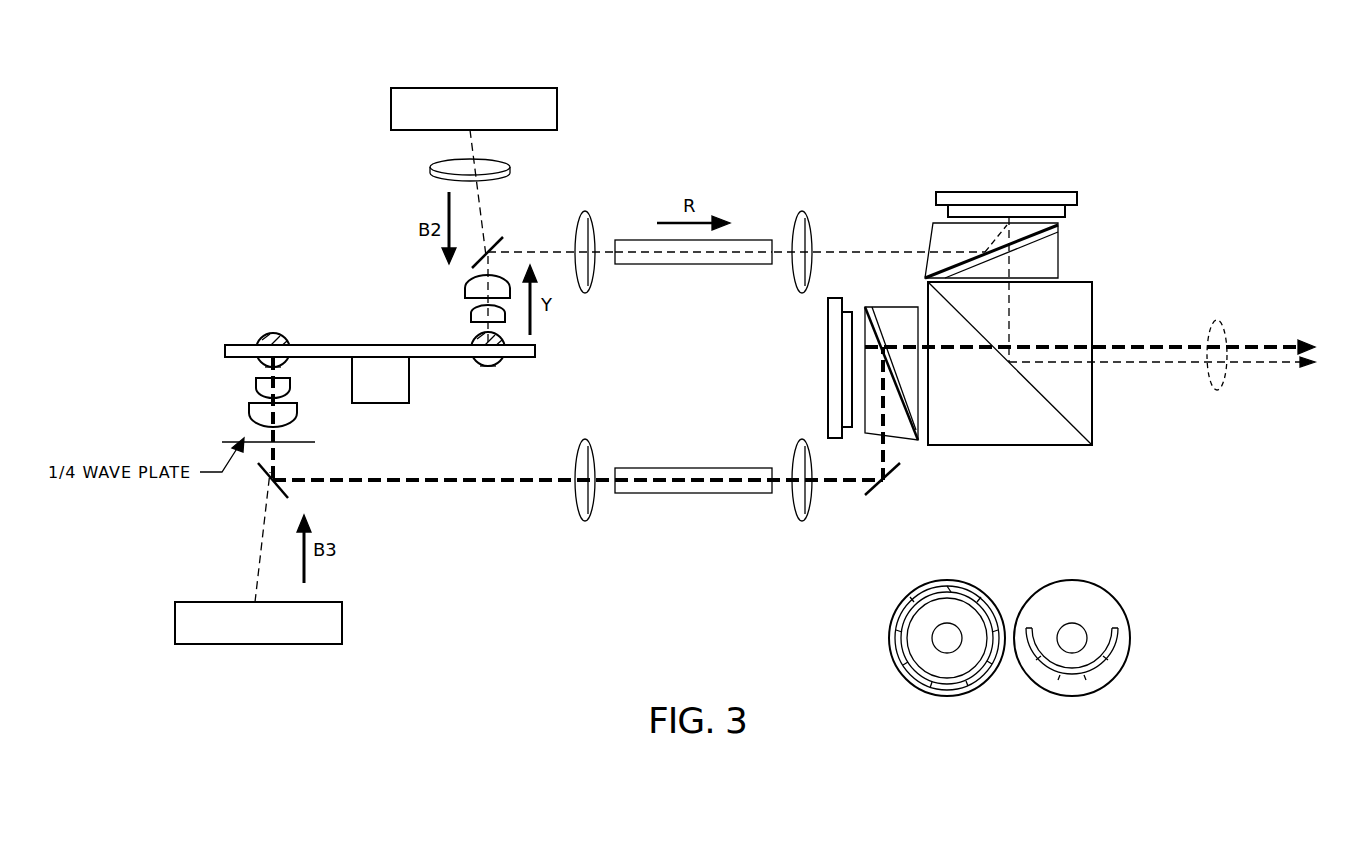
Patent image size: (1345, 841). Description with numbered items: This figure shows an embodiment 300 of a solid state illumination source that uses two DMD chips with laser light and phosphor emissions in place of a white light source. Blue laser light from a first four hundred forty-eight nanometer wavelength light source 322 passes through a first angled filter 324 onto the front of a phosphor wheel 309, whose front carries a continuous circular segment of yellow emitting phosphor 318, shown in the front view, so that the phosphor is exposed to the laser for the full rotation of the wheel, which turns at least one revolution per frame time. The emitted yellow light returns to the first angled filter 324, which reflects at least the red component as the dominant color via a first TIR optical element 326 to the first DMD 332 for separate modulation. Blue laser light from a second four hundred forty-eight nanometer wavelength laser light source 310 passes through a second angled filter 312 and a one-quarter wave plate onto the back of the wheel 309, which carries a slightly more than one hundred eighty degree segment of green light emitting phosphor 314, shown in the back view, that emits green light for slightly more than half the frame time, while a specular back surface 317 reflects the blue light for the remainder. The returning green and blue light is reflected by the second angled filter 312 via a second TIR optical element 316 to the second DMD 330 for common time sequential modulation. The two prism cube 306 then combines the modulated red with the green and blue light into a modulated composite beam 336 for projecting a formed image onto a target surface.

The embodiment 300 is at (968, 70).
The two prism cube 306 is at (1092, 405).
The phosphor wheel 309 is at (452, 357).
The second 448 nm wavelength laser light source 310 is at (175, 622).
The second angled filter 312 is at (265, 470).
The green light emitting phosphor 314 is at (258, 365).
The second TIR optical element 316 is at (903, 442).
The specular back surface 317 is at (335, 357).
The yellow emitting phosphor 318 is at (258, 338).
The first 448 nm wavelength light source 322 is at (391, 108).
The first angled filter 324 is at (503, 240).
The first TIR optical element 326 is at (930, 235).
The second DMD 330 is at (828, 365).
The first DMD 332 is at (1005, 192).
The modulated composite beam 336 is at (1217, 320).